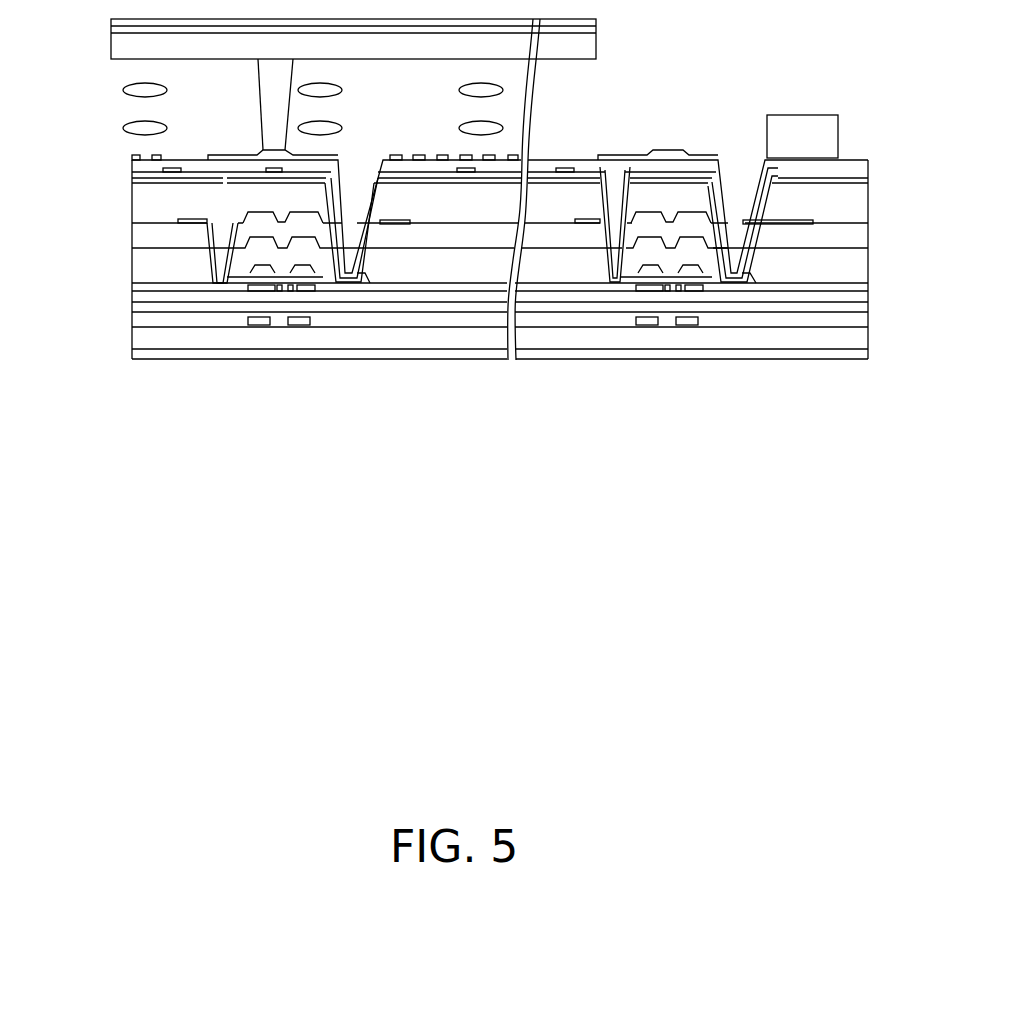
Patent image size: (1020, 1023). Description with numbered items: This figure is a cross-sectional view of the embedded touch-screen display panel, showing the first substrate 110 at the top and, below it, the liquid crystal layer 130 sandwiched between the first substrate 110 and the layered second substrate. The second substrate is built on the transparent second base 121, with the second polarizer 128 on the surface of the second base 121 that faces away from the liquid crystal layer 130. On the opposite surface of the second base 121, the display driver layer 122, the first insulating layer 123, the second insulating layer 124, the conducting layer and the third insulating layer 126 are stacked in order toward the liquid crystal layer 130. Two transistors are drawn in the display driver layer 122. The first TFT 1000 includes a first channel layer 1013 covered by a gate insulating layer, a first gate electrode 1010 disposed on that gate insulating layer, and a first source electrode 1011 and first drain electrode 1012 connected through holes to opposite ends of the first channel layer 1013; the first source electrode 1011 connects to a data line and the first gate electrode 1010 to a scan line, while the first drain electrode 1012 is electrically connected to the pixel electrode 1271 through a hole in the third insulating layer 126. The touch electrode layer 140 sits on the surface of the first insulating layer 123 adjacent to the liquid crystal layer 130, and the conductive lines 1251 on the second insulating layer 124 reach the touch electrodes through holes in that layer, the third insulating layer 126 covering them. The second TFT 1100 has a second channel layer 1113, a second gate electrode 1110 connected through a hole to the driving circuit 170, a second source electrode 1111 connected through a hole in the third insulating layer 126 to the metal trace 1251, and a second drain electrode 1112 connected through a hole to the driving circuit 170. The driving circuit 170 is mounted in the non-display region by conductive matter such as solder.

The first substrate 110 is at (608, 12).
The liquid crystal layer 130 is at (113, 106).
The third insulating layer 126 is at (188, 162).
The pixel electrode 1271 is at (245, 156).
The conductive line 1251 is at (170, 170).
The second insulating layer 124 is at (133, 180).
The touch electrode layer 140 is at (158, 183).
The first insulating layer 123 is at (143, 213).
The display driver layer 122 is at (127, 227).
The second base 121 is at (140, 338).
The second polarizer 128 is at (158, 353).
The first TFT 1000 is at (293, 279).
The first gate electrode 1010 is at (260, 268).
The first source electrode 1011 is at (208, 262).
The first drain electrode 1012 is at (402, 224).
The first channel layer 1013 is at (345, 268).
The second TFT 1100 is at (685, 258).
The second gate electrode 1110 is at (653, 268).
The second source electrode 1111 is at (547, 224).
The second drain electrode 1112 is at (763, 222).
The second channel layer 1113 is at (738, 287).
The driving circuit 170 is at (797, 132).